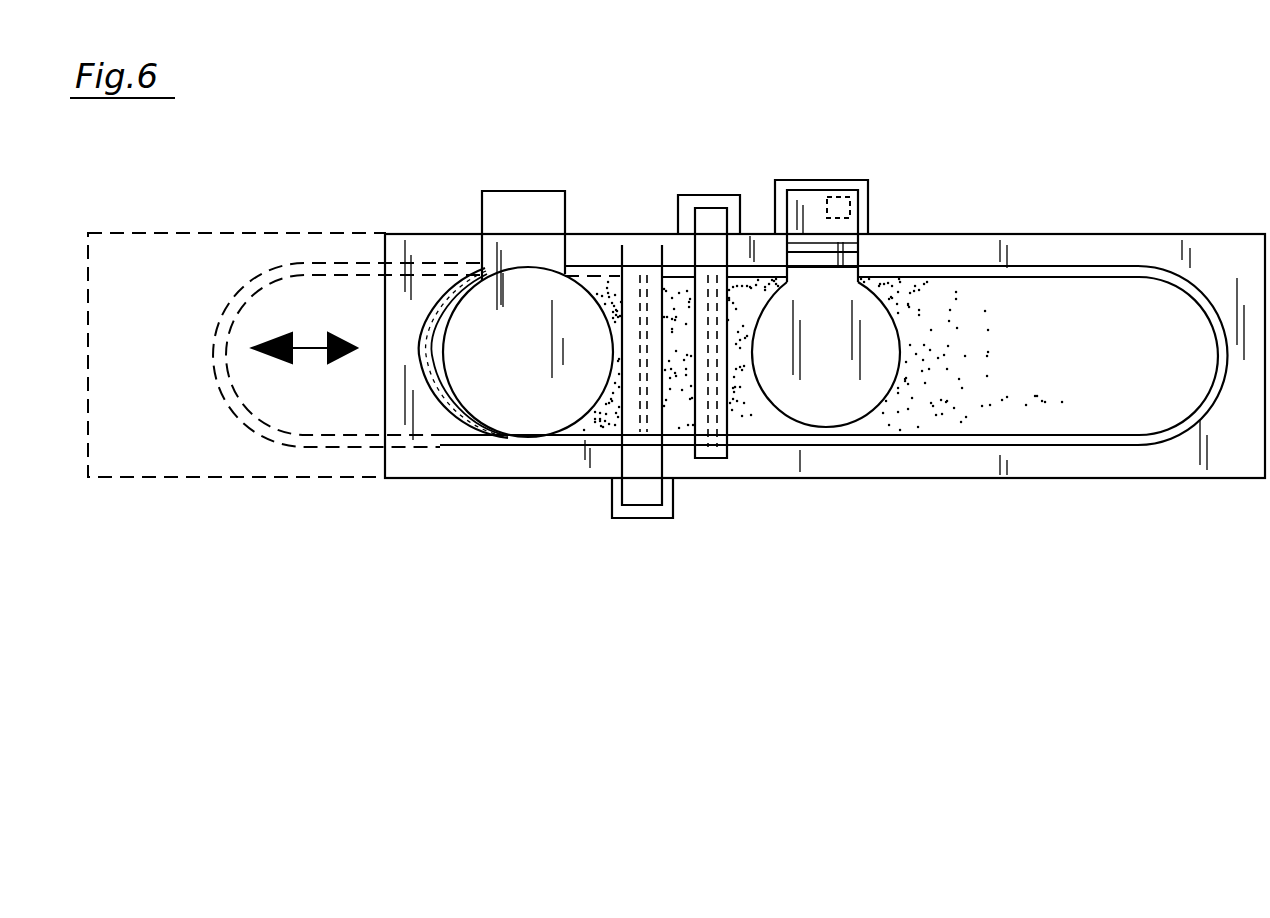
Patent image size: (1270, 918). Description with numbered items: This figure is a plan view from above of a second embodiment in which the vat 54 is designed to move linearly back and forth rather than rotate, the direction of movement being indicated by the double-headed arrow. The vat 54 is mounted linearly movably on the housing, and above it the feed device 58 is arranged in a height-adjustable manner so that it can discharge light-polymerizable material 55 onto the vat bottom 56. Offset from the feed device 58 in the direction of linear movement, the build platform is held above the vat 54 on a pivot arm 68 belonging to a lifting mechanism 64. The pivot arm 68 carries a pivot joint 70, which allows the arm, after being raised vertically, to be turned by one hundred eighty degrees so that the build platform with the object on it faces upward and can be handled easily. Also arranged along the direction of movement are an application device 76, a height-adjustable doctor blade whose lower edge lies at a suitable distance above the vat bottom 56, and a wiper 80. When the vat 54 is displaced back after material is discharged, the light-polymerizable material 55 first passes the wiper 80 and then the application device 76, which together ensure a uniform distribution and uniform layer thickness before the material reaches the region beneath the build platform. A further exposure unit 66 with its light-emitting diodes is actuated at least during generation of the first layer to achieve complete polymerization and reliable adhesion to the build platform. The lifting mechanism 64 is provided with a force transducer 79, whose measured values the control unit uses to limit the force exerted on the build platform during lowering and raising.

The vat 54 is at (1018, 255).
The light-polymerizable material 55 is at (917, 382).
The vat bottom 56 is at (1105, 312).
The feed device 58 is at (510, 398).
The lifting mechanism 64 is at (812, 182).
The further exposure unit 66 is at (822, 398).
The pivot arm 68 is at (806, 212).
The pivot joint 70 is at (845, 248).
The application device 76 is at (712, 225).
The force transducer 79 is at (840, 198).
The wiper 80 is at (641, 480).